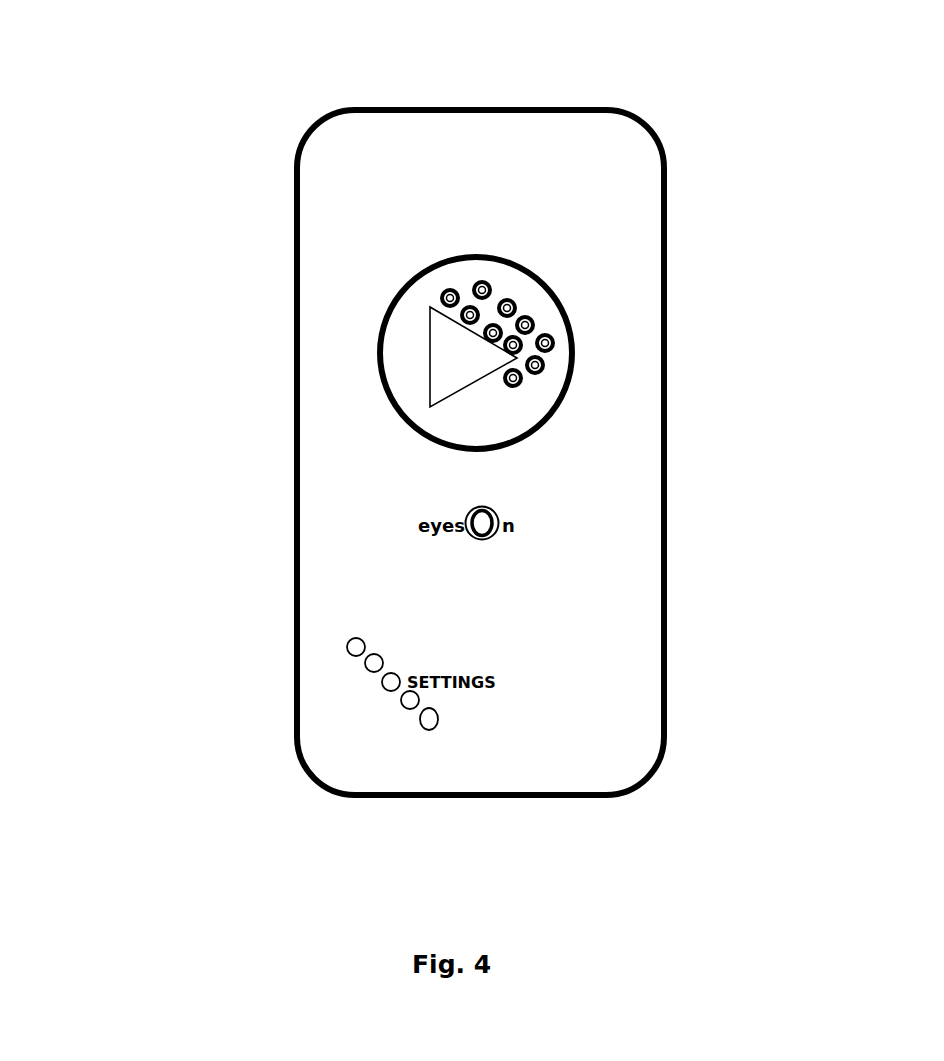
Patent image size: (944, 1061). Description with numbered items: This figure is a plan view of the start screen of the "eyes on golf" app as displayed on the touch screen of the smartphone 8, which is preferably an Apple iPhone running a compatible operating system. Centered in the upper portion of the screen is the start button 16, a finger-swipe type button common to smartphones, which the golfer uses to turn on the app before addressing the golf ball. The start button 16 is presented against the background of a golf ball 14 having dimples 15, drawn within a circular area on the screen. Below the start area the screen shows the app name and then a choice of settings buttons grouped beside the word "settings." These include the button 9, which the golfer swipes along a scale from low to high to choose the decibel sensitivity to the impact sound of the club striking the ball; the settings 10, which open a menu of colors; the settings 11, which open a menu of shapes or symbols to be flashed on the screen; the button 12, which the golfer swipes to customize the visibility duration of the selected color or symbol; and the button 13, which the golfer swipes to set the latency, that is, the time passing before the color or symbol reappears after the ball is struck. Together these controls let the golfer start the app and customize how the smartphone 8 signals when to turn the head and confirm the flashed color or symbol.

The smartphone 8 is at (270, 118).
The button 9 is at (347, 648).
The settings 10 is at (365, 666).
The settings 11 is at (383, 686).
The button 12 is at (402, 706).
The button 13 is at (422, 728).
The golf ball 14 is at (569, 314).
The dimples 15 is at (550, 367).
The start button 16 is at (440, 376).